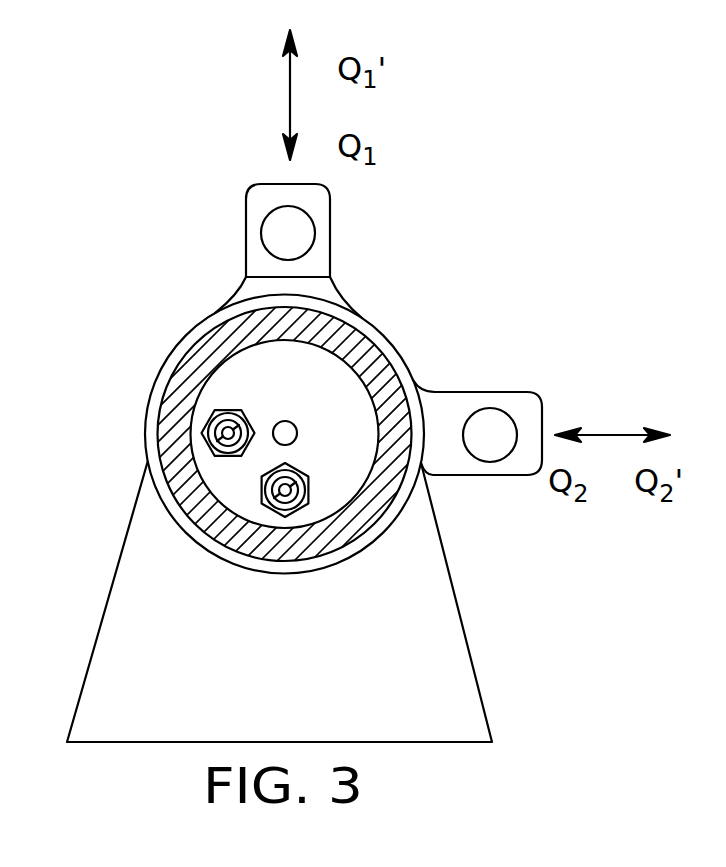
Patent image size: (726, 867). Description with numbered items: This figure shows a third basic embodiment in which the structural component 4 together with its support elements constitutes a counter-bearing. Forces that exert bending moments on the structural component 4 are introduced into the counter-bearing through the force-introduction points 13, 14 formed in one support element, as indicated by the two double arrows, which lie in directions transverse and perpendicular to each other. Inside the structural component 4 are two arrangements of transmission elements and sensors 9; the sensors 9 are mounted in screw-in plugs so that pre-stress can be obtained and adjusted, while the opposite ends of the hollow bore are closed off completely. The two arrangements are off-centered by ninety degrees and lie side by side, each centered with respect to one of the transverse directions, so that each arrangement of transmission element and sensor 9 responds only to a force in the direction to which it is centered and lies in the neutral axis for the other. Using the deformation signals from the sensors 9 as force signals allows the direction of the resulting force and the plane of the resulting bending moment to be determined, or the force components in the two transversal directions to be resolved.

The structural component 4 is at (338, 382).
The sensor 9 is at (217, 412).
The force-introduction point 13 is at (277, 228).
The force-introduction point 14 is at (493, 428).